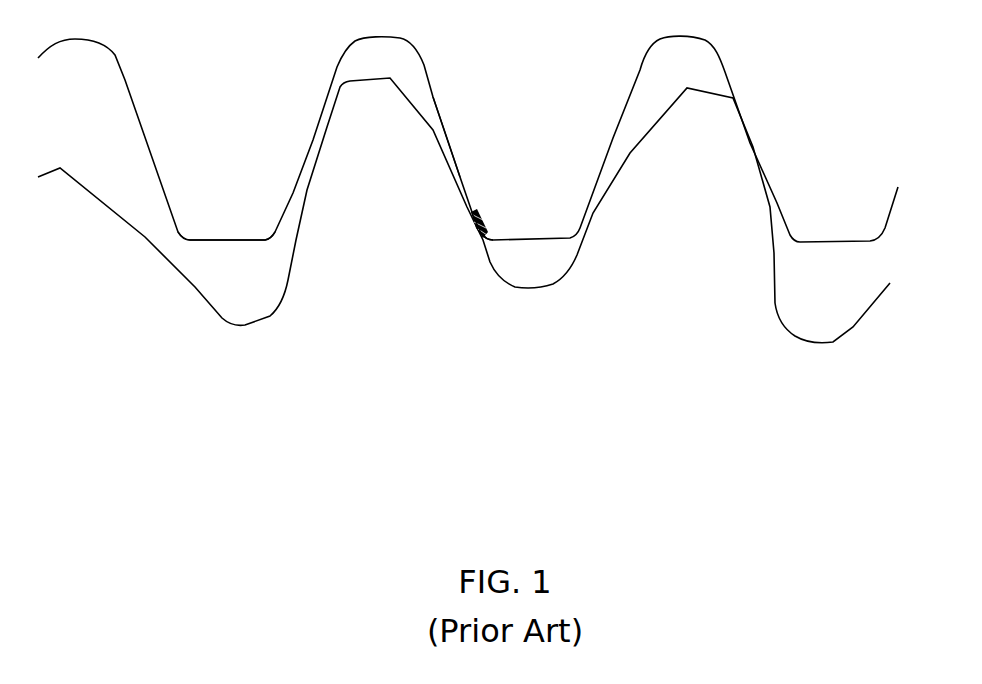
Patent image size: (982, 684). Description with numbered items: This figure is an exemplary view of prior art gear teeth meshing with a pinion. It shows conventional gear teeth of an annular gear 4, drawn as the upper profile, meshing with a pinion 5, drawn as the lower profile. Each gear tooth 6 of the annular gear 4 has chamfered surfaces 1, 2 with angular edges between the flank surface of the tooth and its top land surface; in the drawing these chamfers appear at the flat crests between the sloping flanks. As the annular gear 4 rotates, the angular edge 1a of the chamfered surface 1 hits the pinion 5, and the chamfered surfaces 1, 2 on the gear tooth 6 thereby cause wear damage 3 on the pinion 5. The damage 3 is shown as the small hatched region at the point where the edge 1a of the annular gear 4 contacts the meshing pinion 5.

The chamfered surface 1 is at (188, 239).
The chamfered surface 2 is at (269, 237).
The angular edge 1a is at (483, 228).
The wear damage 3 is at (468, 234).
The annular gear 4 is at (613, 138).
The pinion 5 is at (595, 220).
The gear tooth 6 is at (525, 173).